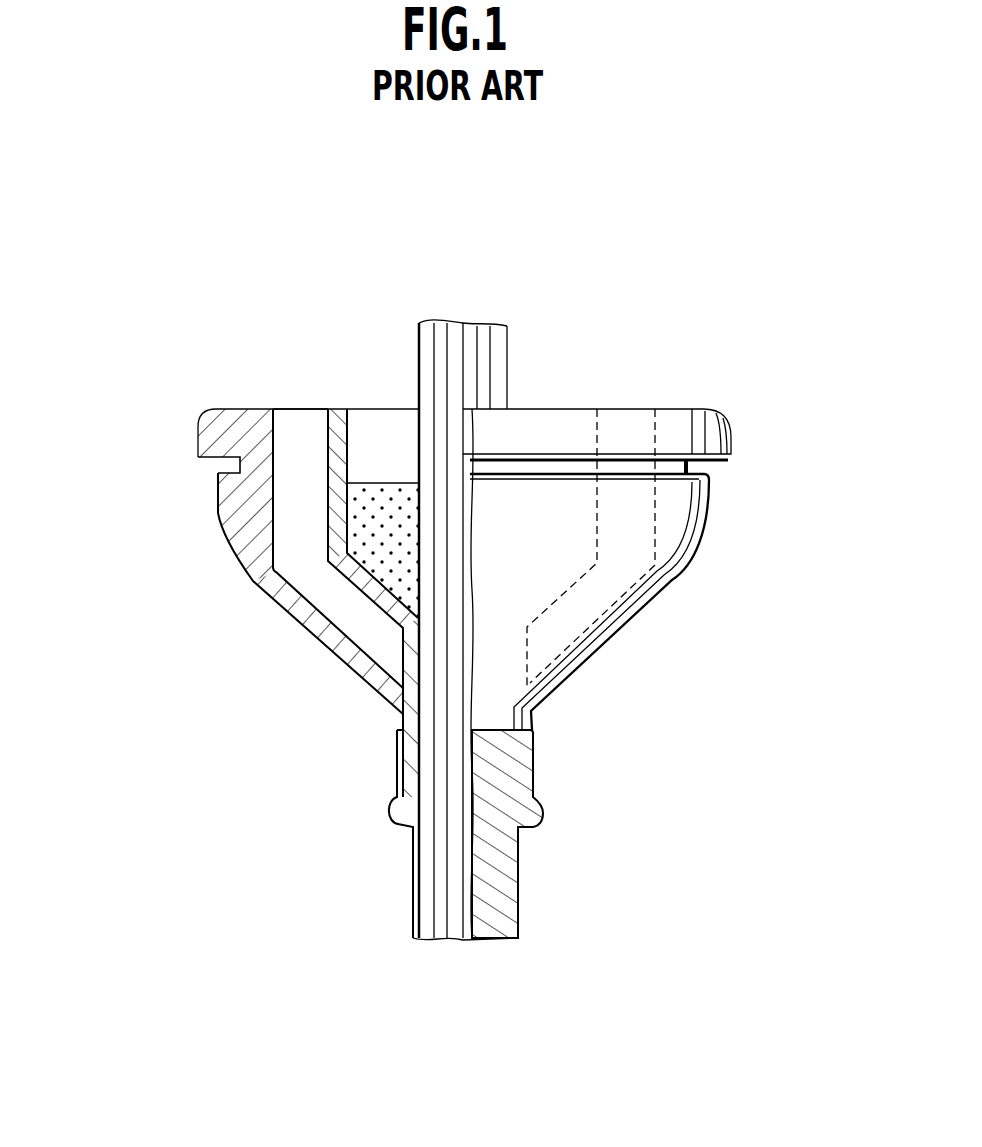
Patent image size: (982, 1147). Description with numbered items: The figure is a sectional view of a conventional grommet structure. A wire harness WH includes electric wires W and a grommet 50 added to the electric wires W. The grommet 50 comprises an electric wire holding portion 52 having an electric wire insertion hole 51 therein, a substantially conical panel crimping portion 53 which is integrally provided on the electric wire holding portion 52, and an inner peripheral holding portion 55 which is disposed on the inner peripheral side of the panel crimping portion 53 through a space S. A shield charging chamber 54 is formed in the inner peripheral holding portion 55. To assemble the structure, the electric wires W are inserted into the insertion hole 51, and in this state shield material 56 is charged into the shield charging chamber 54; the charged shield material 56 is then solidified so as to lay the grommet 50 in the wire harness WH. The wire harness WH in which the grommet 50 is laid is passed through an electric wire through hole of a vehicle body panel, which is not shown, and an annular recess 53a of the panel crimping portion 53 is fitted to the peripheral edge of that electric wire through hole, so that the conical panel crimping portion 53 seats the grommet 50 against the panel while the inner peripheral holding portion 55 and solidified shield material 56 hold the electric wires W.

The grommet 50 is at (214, 518).
The electric wire insertion hole 51 is at (400, 793).
The electric wire holding portion 52 is at (519, 866).
The panel crimping portion 53 is at (256, 561).
The annular recess 53a is at (227, 467).
The shield charging chamber 54 is at (597, 518).
The inner peripheral holding portion 55 is at (335, 427).
The shield material 56 is at (388, 516).
The space S is at (295, 423).
The electric wires W is at (483, 340).
The wire harness WH is at (669, 318).